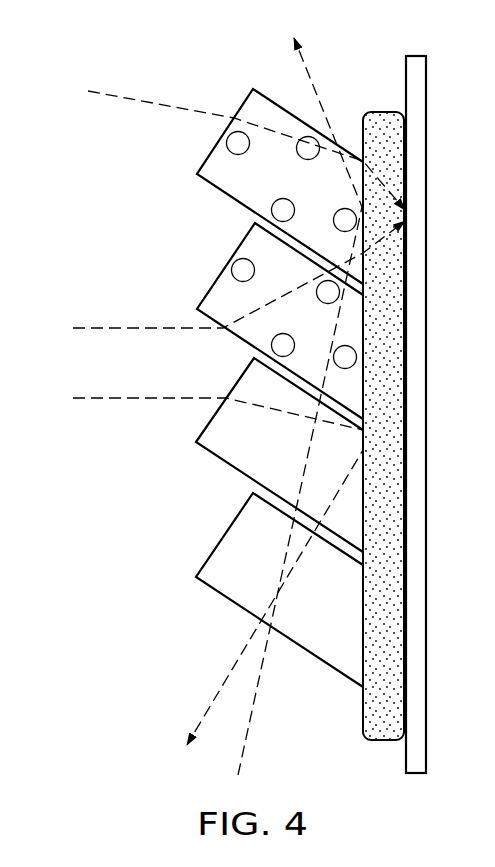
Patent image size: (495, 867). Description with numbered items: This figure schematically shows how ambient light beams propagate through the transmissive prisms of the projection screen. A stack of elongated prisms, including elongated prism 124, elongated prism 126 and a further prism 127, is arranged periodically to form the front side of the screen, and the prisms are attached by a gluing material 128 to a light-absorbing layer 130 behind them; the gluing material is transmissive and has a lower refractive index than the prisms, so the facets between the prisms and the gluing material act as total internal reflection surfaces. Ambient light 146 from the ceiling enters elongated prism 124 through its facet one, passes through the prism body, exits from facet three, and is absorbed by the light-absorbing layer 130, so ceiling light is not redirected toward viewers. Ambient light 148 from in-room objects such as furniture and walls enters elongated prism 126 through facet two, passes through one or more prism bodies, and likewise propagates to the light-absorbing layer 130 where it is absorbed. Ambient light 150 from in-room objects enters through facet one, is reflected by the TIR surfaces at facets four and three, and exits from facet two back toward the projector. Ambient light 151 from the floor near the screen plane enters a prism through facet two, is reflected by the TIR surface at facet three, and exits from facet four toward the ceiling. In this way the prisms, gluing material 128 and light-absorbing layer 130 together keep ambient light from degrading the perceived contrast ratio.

The elongated prism 124 is at (215, 147).
The elongated prism 126 is at (226, 263).
The third light guide plate 127 is at (240, 377).
The gluing material 128 is at (373, 110).
The light-absorbing layer 130 is at (427, 93).
The ambient light 146 is at (130, 100).
The ambient light 148 is at (102, 327).
The ambient light 150 is at (100, 398).
The ambient light 151 is at (255, 702).